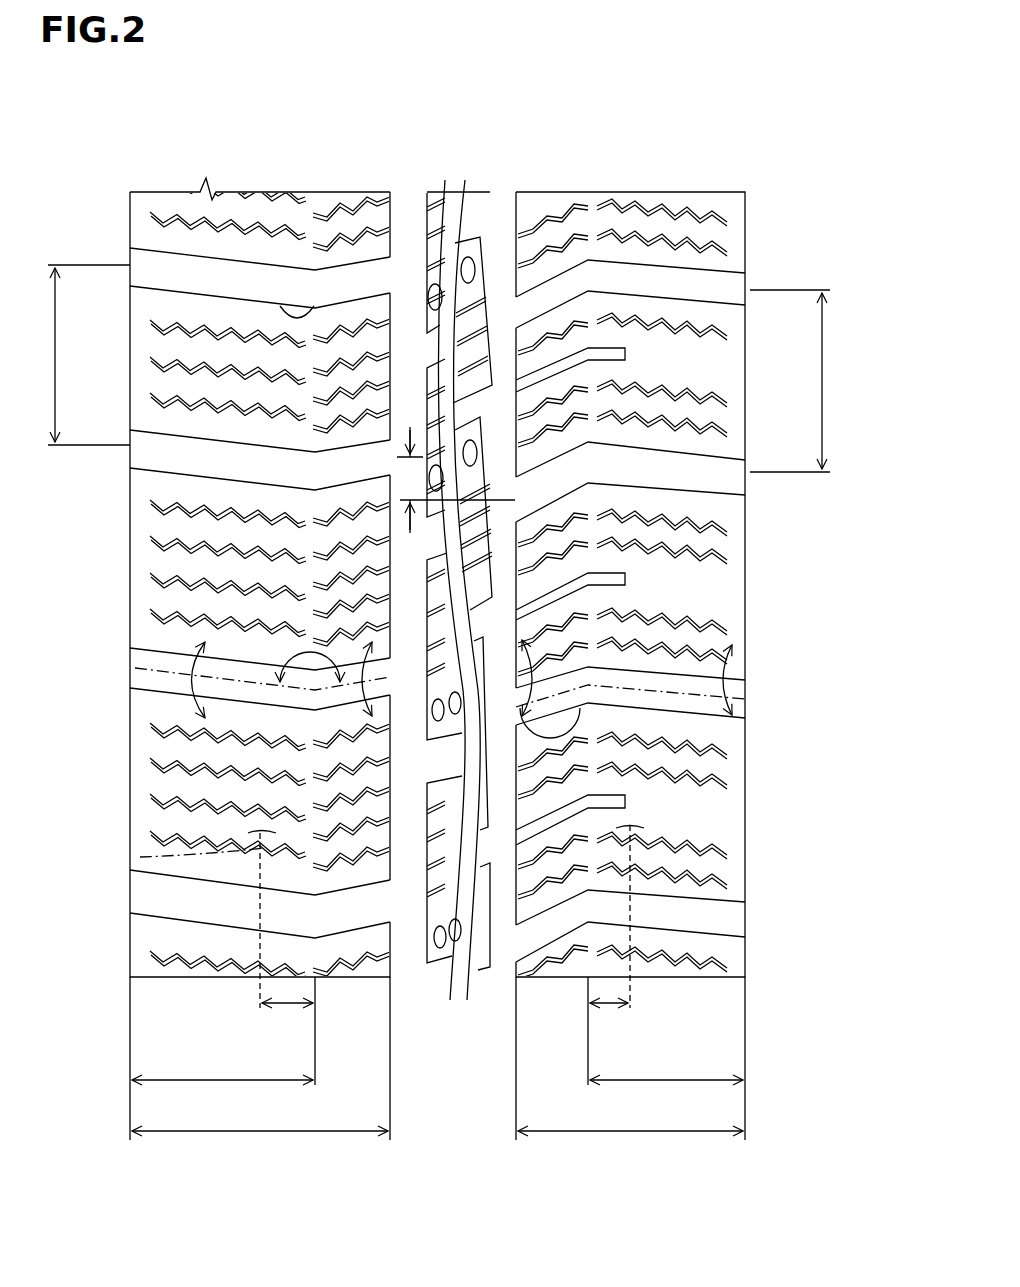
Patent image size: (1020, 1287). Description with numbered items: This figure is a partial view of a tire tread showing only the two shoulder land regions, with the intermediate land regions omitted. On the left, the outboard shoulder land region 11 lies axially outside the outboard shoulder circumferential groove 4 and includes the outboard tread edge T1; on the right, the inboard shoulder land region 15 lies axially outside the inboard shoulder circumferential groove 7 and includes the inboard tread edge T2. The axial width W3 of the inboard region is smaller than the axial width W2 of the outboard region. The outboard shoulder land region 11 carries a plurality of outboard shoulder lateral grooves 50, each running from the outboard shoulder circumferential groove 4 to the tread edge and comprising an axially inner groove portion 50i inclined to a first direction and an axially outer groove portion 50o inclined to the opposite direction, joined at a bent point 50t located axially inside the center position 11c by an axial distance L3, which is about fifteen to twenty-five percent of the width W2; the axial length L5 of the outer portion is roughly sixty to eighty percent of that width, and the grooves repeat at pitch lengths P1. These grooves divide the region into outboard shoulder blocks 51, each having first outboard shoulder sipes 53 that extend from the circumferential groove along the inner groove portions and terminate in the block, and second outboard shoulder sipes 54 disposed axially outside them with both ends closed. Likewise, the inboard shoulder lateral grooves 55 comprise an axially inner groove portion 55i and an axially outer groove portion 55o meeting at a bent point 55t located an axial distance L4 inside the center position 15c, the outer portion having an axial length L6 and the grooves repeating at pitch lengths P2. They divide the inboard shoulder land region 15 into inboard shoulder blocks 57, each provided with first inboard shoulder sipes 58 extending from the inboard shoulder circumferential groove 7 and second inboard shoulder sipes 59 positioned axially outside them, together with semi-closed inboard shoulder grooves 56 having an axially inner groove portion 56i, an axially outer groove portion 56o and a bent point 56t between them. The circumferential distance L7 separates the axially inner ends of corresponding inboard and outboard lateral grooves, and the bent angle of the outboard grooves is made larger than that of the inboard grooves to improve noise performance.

The outboard shoulder circumferential groove 4 is at (408, 228).
The inboard shoulder circumferential groove 7 is at (502, 250).
The outboard shoulder land region 11 is at (236, 242).
The center position 11c is at (140, 858).
The inboard shoulder land region 15 is at (666, 245).
The center position 15c is at (640, 980).
The outboard shoulder lateral groove 50 is at (235, 285).
The bent point 50t is at (283, 300).
The axially outer groove portion 50o is at (262, 700).
The axially inner groove portion 50i is at (343, 705).
The outboard shoulder block 51 is at (255, 357).
The first outboard shoulder sipe 53 is at (347, 232).
The second outboard shoulder sipe 54 is at (188, 204).
The inboard shoulder lateral groove 55 is at (690, 283).
The bent point 55t is at (563, 240).
The axially outer groove portion 55o is at (662, 656).
The axially inner groove portion 55i is at (545, 650).
The semi-closed inboard shoulder groove 56 is at (630, 575).
The bent point 56t is at (618, 346).
The axially outer groove portion 56o is at (608, 356).
The axially inner groove portion 56i is at (558, 372).
The inboard shoulder block 57 is at (575, 585).
The first inboard shoulder sipe 58 is at (540, 240).
The second inboard shoulder sipe 59 is at (690, 245).
The outboard tread edge T1 is at (135, 232).
The inboard tread edge T2 is at (742, 232).
The pitch length P1 is at (70, 355).
The pitch length P2 is at (807, 381).
The axial distance L3 is at (437, 1058).
The axial distance L4 is at (609, 1023).
The axial length L5 is at (222, 1096).
The axial length L6 is at (666, 1096).
The circumferential distance L7 is at (405, 484).
The axial width W2 is at (260, 1148).
The axial width W3 is at (630, 1148).